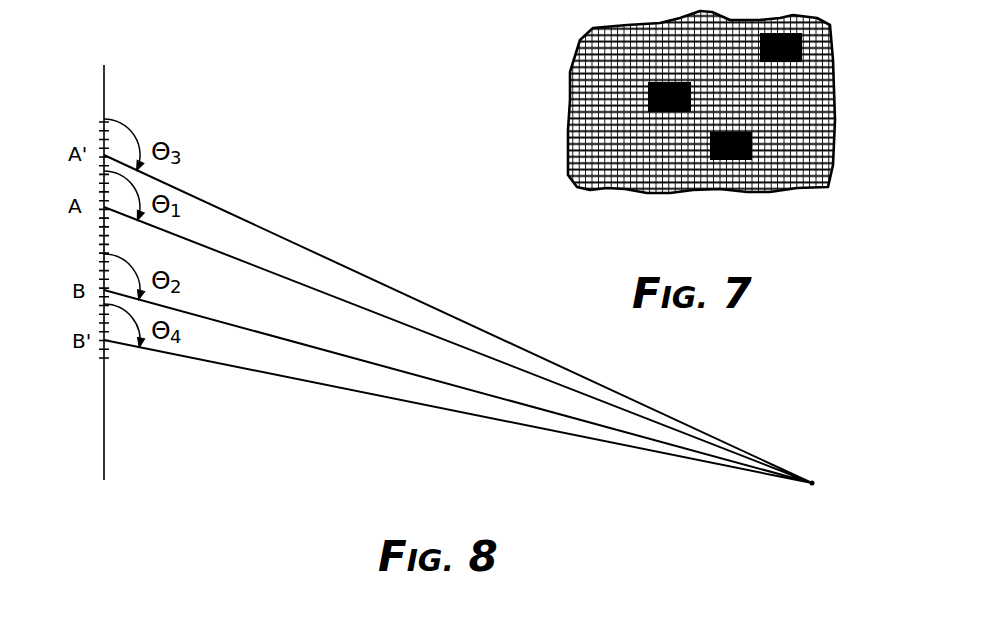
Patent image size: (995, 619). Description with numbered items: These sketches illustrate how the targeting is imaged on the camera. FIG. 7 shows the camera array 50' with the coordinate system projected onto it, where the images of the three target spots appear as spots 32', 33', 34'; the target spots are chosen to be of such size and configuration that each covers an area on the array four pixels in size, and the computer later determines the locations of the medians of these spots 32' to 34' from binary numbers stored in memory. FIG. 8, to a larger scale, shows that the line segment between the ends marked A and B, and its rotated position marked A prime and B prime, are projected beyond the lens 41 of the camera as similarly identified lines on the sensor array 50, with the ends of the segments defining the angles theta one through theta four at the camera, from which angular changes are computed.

In FIG. 8, the sensor array 50 is at (81, 272).
In FIG. 8, the lens 41 is at (812, 483).
In FIG. 7, the detector array (matrix) 50' is at (666, 105).
In FIG. 7, the spot 32' is at (832, 46).
In FIG. 7, the spot 33' is at (599, 97).
In FIG. 7, the spot 34' is at (753, 179).